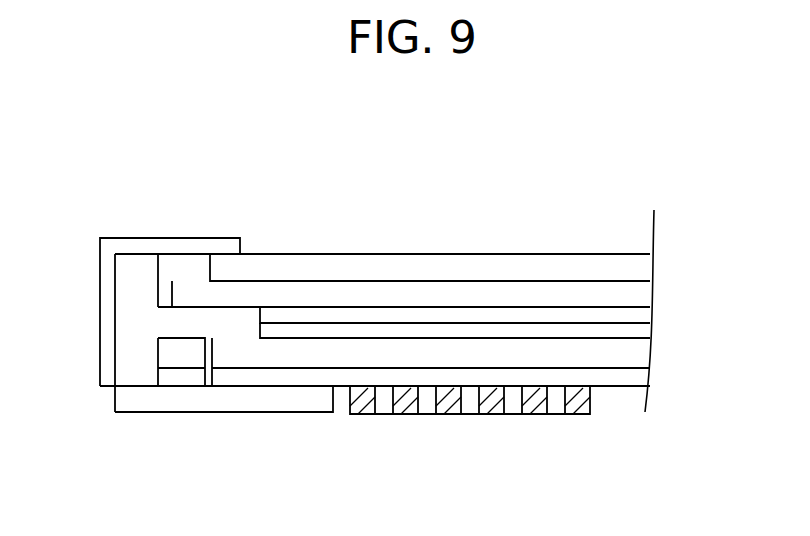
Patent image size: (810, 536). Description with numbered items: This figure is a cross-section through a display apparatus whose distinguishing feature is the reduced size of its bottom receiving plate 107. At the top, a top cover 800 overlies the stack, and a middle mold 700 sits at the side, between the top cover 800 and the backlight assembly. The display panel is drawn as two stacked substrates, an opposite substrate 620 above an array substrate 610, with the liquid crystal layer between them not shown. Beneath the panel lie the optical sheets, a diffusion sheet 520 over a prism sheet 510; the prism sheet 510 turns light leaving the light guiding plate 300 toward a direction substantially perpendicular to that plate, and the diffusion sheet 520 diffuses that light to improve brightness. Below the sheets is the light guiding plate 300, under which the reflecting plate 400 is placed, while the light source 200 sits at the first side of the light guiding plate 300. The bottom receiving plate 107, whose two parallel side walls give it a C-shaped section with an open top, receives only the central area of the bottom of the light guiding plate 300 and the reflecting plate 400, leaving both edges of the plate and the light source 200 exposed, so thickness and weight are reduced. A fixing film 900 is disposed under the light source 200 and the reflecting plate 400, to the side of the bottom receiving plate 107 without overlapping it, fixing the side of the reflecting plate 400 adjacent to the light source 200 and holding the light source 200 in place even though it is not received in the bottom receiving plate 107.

The top cover 800 is at (131, 238).
The middle mold 700 is at (130, 272).
The opposite substrate 620 is at (643, 271).
The array substrate 610 is at (643, 297).
The diffusion sheet 520 is at (643, 320).
The prism sheet 510 is at (643, 338).
The light guiding plate 300 is at (643, 358).
The reflecting plate 400 is at (643, 383).
The light source 200 is at (178, 380).
The fixing film 900 is at (277, 400).
The bottom receiving plate 107 is at (451, 403).